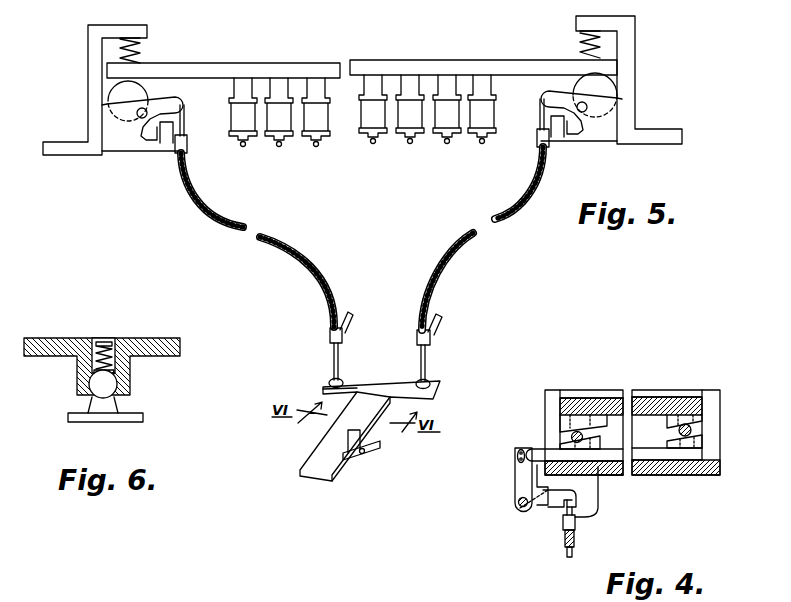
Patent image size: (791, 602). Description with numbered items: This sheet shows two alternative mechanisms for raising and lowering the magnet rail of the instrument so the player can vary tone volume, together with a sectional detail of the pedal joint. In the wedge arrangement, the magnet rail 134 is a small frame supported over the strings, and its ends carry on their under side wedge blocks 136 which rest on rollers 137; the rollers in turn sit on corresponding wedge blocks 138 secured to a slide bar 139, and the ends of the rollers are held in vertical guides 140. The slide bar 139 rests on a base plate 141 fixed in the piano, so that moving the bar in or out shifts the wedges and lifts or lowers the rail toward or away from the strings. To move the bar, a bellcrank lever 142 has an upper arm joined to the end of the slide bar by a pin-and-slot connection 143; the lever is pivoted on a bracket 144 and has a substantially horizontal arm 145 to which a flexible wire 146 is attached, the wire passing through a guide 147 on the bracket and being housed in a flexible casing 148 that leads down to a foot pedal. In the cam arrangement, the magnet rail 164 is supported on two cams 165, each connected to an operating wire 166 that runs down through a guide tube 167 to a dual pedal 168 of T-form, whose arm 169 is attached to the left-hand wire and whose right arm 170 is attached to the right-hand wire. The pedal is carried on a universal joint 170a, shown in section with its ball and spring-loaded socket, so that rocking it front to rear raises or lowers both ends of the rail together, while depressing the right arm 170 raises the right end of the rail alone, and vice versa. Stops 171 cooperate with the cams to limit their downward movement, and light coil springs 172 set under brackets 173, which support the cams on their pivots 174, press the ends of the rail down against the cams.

In FIG. 4, the magnet rail 134 is at (648, 398).
In FIG. 4, the wedge blocks 136 is at (582, 418).
In FIG. 4, the rollers 137 is at (572, 437).
In FIG. 4, the wedge blocks 138 is at (593, 443).
In FIG. 4, the slide bar 139 is at (525, 448).
In FIG. 4, the vertical guides 140 is at (593, 430).
In FIG. 4, the base plate 141 is at (678, 473).
In FIG. 4, the bellcrank lever 142 is at (518, 478).
In FIG. 4, the pin-and-slot connection 143 is at (513, 455).
In FIG. 4, the bracket 144 is at (553, 490).
In FIG. 4, the horizontal arm 145 is at (560, 503).
In FIG. 4, the flexible wire 146 is at (573, 552).
In FIG. 4, the guide 147 is at (575, 520).
In FIG. 4, the flexible casing 148 is at (575, 537).
In FIG. 5, the magnet rail 164 is at (460, 43).
In FIG. 5, the cams 165 is at (137, 93).
In FIG. 5, the operating wires 166 is at (182, 125).
In FIG. 5, the guide tubes 167 is at (216, 203).
In FIG. 5, the dual pedal 168 is at (397, 362).
In FIG. 6, the dual pedal 168 is at (168, 329).
In FIG. 5, the arm 169 is at (352, 376).
In FIG. 5, the right arm 170 is at (433, 383).
In FIG. 5, the universal joint 170a is at (370, 430).
In FIG. 6, the universal joint 170a is at (120, 378).
In FIG. 5, the stops 171 is at (163, 130).
In FIG. 5, the coil springs 172 is at (143, 47).
In FIG. 5, the brackets 173 is at (95, 52).
In FIG. 5, the pivots 174 is at (147, 111).